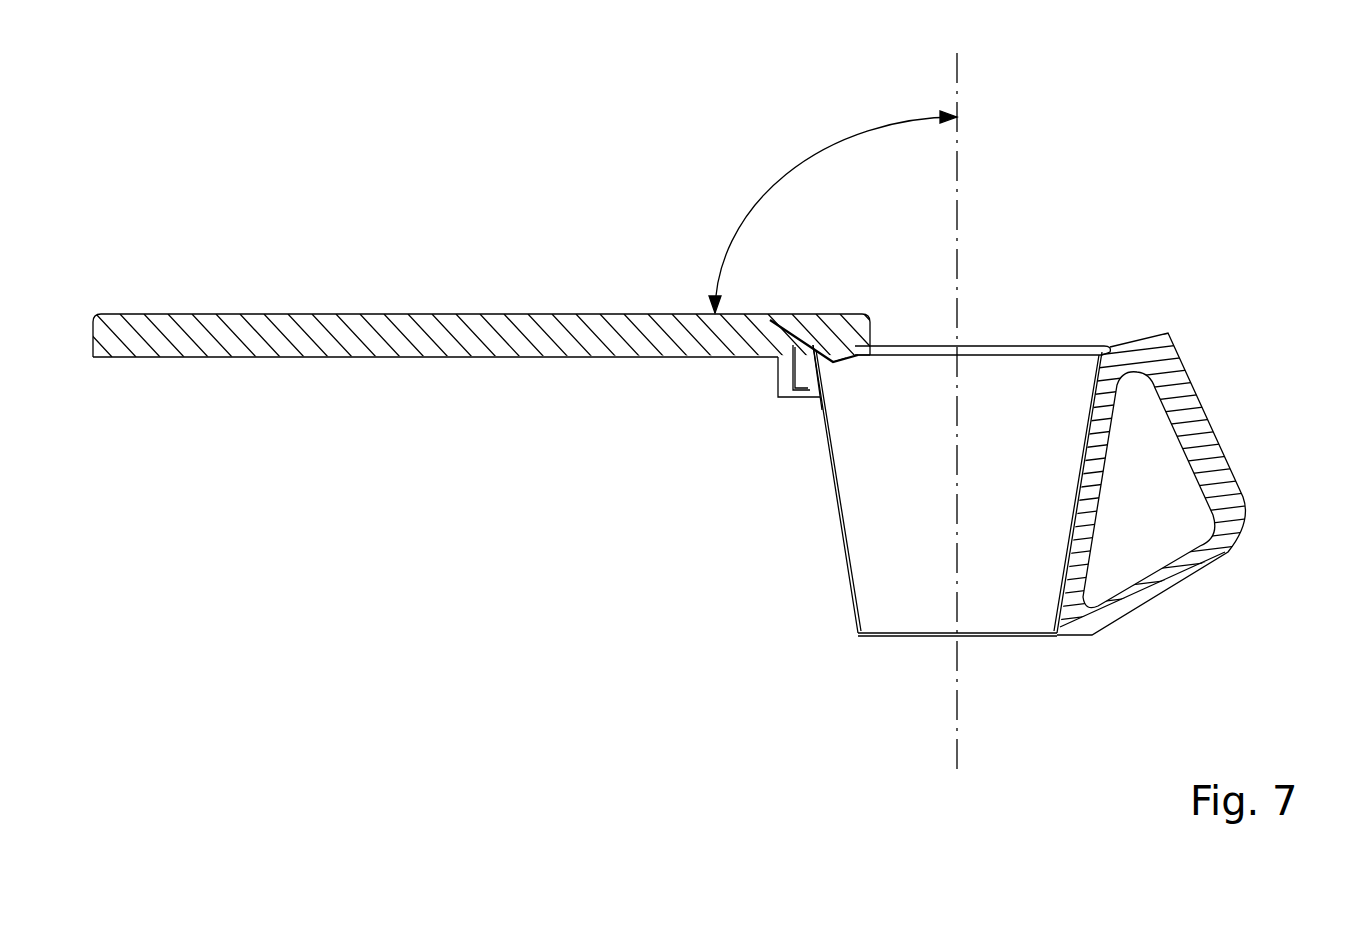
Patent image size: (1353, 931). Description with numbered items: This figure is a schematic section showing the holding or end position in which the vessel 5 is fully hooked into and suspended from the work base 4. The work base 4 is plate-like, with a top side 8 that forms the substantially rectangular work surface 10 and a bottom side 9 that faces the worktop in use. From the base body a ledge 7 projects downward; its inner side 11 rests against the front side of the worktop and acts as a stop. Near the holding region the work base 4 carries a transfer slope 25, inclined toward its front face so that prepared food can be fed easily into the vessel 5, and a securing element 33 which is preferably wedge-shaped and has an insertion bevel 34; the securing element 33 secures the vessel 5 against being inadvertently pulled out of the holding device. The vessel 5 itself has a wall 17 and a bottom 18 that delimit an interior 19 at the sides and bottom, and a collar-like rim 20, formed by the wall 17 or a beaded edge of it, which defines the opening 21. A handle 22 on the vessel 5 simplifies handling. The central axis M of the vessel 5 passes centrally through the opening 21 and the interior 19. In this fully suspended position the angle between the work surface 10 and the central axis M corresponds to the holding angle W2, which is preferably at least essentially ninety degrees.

The work base 4 is at (237, 232).
The top side 8 is at (488, 275).
The work surface 10 is at (337, 313).
The bottom side 9 is at (255, 357).
The ledge 7 is at (790, 400).
The inner side 11 is at (770, 378).
The vessel 5 is at (1102, 318).
The opening 21 is at (992, 345).
The transfer slope 25 is at (805, 317).
The securing element 33 is at (842, 317).
The insertion bevel 34 is at (882, 320).
The wall 17 is at (838, 543).
The bottom 18 is at (920, 637).
The interior 19 is at (990, 530).
The rim 20 is at (1178, 437).
The handle 22 is at (1193, 415).
The holding angle W2 is at (755, 212).
The central axis M is at (959, 69).